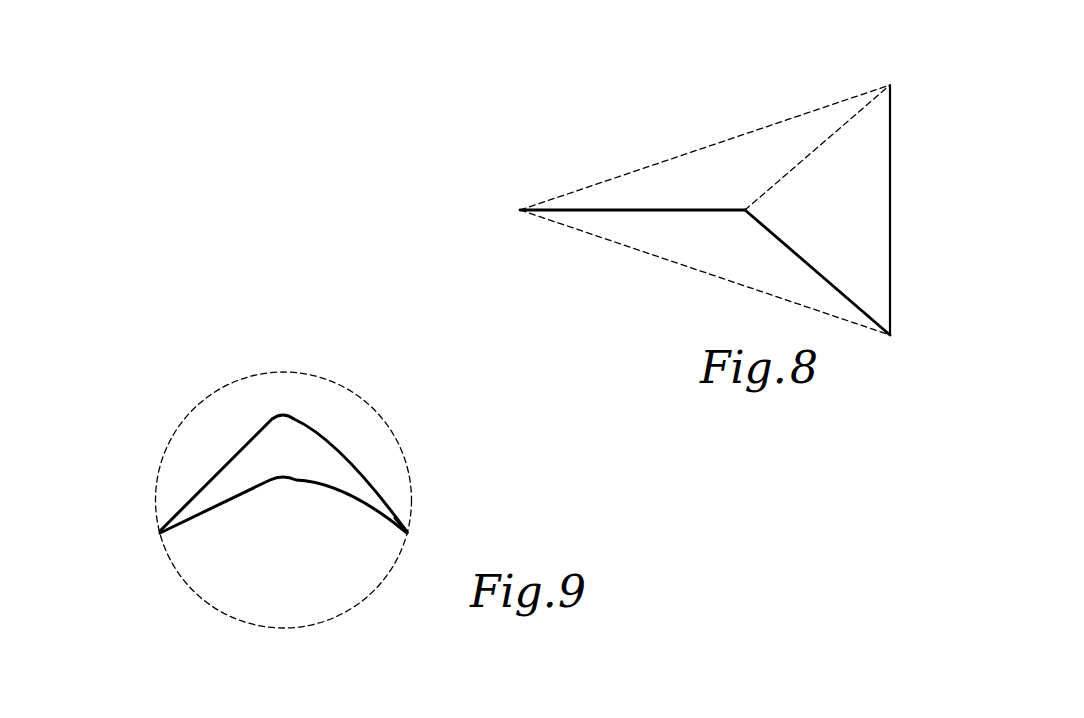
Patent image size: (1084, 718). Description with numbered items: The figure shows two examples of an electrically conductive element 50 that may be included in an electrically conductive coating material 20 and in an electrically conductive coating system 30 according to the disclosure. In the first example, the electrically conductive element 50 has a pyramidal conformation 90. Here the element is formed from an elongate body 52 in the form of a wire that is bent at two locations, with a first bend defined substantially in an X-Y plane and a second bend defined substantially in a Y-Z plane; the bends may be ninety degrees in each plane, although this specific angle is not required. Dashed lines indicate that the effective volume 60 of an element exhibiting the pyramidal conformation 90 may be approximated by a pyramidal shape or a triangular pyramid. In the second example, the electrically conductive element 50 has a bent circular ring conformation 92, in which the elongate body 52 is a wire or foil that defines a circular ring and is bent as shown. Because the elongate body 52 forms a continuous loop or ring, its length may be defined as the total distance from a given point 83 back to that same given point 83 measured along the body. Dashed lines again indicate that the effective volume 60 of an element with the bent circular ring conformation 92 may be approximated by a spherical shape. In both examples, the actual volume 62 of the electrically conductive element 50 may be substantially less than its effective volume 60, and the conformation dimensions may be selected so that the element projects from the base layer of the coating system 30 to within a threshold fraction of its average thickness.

In FIG. 8, the electrically conductive coating material 20 is at (490, 95).
In FIG. 9, the electrically conductive coating material 20 is at (168, 257).
In FIG. 8, the electrically conductive coating system 30 is at (485, 138).
In FIG. 9, the electrically conductive coating system 30 is at (163, 300).
In FIG. 8, the electrically conductive element 50 is at (490, 188).
In FIG. 9, the electrically conductive element 50 is at (157, 363).
In FIG. 8, the effective volume 60 is at (680, 153).
In FIG. 9, the effective volume 60 is at (220, 385).
In FIG. 8, the actual volume 62 is at (727, 208).
In FIG. 9, the actual volume 62 is at (283, 416).
In FIG. 8, the elongate body 52 is at (890, 258).
In FIG. 9, the elongate body 52 is at (372, 480).
In FIG. 8, the pyramidal conformation 90 is at (903, 117).
In FIG. 9, the bent circular ring conformation 92 is at (403, 393).
In FIG. 9, the given point 83 is at (216, 512).